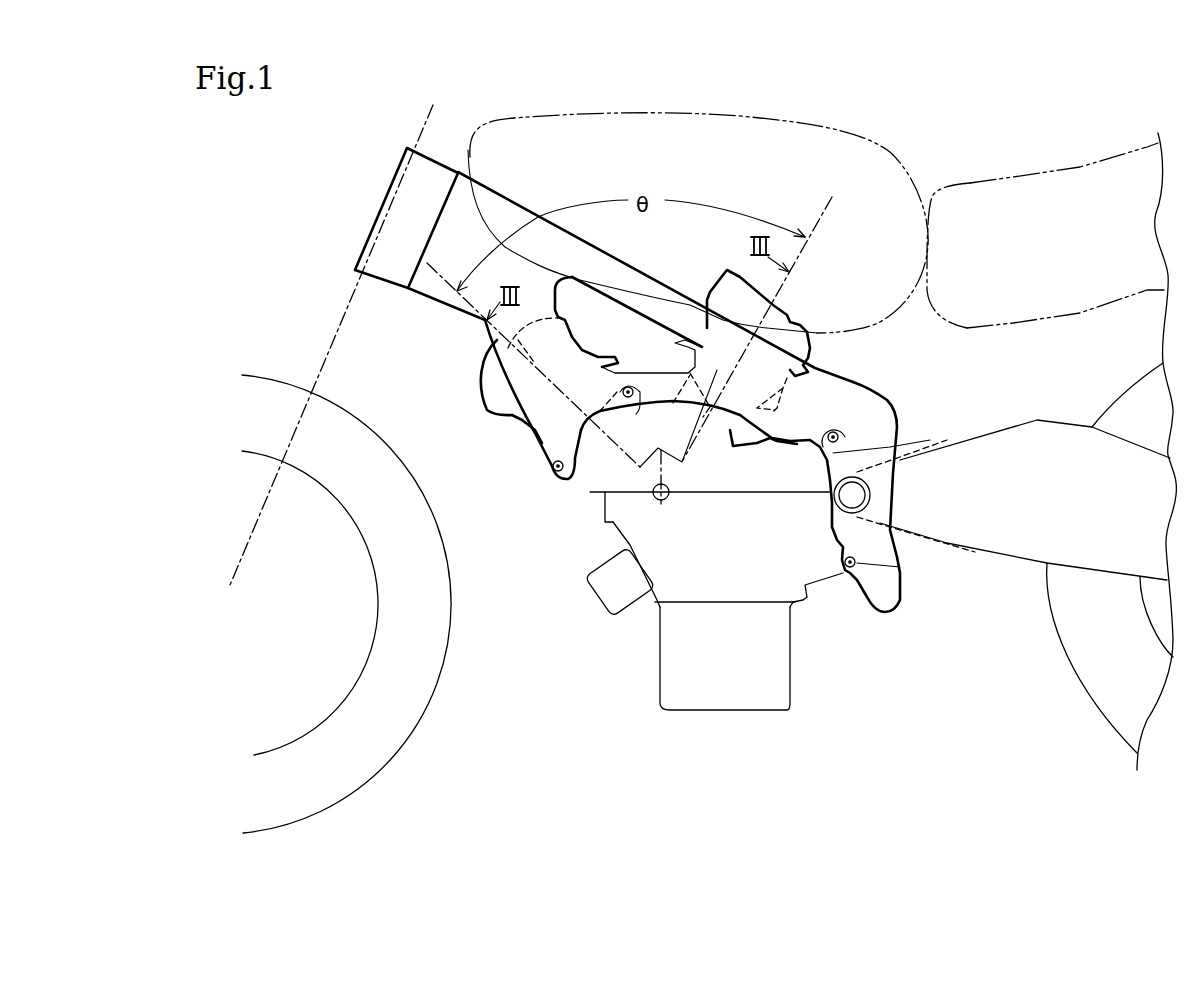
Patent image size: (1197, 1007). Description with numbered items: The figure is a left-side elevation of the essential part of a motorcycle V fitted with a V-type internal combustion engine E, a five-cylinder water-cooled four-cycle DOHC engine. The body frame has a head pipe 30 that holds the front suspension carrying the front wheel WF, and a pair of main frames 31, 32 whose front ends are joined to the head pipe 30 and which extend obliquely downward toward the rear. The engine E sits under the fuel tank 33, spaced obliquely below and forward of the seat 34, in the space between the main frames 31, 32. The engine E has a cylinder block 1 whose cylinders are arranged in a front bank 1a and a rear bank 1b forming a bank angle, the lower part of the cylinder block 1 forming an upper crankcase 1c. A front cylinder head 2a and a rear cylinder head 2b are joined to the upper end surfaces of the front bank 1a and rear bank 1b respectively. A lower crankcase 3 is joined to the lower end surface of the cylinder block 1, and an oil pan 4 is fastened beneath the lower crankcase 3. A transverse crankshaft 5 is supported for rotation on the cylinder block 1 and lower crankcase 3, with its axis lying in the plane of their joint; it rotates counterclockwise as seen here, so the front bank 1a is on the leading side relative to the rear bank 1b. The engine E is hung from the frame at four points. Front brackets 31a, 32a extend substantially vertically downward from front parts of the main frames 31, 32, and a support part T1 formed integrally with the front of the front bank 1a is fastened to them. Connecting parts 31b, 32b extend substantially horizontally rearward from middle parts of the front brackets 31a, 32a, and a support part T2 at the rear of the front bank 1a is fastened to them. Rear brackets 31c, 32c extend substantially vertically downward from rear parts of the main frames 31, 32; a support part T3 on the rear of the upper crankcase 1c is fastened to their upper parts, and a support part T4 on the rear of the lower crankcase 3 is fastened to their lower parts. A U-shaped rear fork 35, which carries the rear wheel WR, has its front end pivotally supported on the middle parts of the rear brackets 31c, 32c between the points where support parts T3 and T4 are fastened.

The head pipe 30 is at (390, 200).
The main frame 31 is at (462, 197).
The main frame 32 is at (630, 225).
The front bracket 31a is at (530, 387).
The front bracket 32a is at (463, 392).
The connecting part 31b is at (655, 378).
The connecting part 32b is at (642, 264).
The rear bracket 31c is at (880, 503).
The rear bracket 32c is at (926, 497).
The fuel tank 33 is at (817, 140).
The seat 34 is at (1090, 187).
The rear fork 35 is at (1020, 547).
The cylinder block 1 is at (733, 432).
The front bank 1a is at (588, 460).
The rear bank 1b is at (792, 440).
The upper crankcase 1c is at (610, 522).
The front cylinder head 2a is at (505, 417).
The rear cylinder head 2b is at (795, 372).
The lower crankcase 3 is at (807, 580).
The oil pan 4 is at (780, 687).
The crankshaft 5 is at (663, 495).
The support part T1 is at (545, 467).
The support part T2 is at (638, 410).
The support part T3 is at (855, 440).
The support part T4 is at (900, 567).
The V-type internal combustion engine E is at (582, 650).
The motorcycle V is at (1017, 112).
The front wheel WF is at (392, 743).
The rear wheel WR is at (1110, 710).